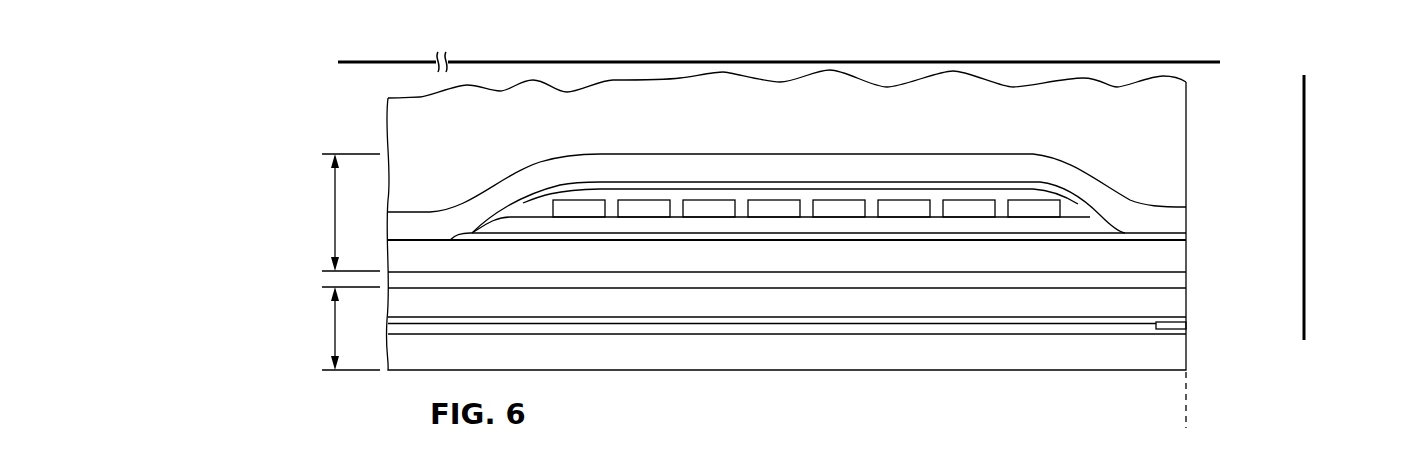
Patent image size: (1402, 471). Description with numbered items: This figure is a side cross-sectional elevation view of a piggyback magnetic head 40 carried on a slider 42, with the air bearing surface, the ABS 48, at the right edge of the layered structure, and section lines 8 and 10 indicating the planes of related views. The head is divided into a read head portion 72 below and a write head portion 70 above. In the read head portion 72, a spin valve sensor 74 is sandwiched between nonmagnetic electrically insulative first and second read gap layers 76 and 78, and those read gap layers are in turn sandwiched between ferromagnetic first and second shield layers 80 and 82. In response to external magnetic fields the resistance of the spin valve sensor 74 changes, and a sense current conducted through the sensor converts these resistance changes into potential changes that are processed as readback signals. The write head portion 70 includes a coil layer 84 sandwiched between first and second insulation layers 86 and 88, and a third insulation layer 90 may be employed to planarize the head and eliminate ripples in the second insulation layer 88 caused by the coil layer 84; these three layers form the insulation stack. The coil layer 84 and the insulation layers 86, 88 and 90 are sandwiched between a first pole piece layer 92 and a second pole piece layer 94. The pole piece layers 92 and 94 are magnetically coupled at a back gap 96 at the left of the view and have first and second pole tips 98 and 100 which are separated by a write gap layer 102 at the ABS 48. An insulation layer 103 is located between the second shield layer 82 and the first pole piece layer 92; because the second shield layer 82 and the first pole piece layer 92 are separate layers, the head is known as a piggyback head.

The section line 8- 8 is at (1320, 332).
The section line 10- 10 is at (345, 52).
The piggyback magnetic head 40 is at (370, 100).
The slider 42 is at (1172, 110).
The ABS 48 is at (1186, 426).
The write head portion 70 is at (335, 216).
The read head portion 72 is at (335, 331).
The spin valve sensor 74 is at (1186, 328).
The first read gap layer 76 is at (853, 333).
The second read gap layer 78 is at (822, 317).
The first shield layer 80 is at (955, 357).
The second shield layer 82 is at (1058, 307).
The coil layer 84 is at (837, 206).
The first insulation layer 86 is at (743, 227).
The second insulation layer 88 is at (1075, 210).
The third insulation layer 90 is at (619, 185).
The first pole piece layer 92 is at (1105, 262).
The second pole piece layer 94 is at (967, 157).
The back gap 96 is at (428, 240).
The first pole tip 98 is at (1186, 262).
The second pole tip 100 is at (1186, 217).
The write gap layer 102 is at (1186, 236).
The insulation layer 103 is at (1013, 280).